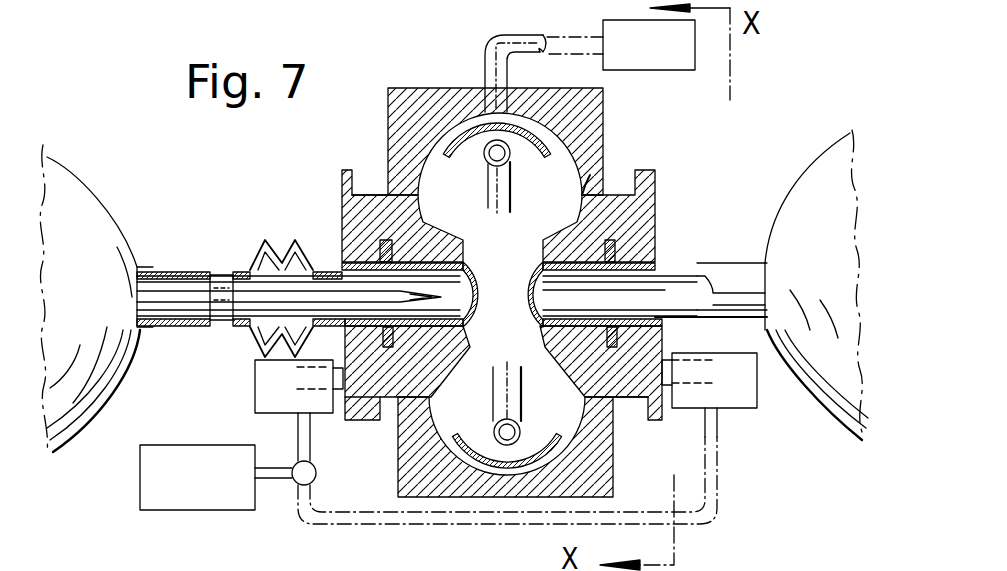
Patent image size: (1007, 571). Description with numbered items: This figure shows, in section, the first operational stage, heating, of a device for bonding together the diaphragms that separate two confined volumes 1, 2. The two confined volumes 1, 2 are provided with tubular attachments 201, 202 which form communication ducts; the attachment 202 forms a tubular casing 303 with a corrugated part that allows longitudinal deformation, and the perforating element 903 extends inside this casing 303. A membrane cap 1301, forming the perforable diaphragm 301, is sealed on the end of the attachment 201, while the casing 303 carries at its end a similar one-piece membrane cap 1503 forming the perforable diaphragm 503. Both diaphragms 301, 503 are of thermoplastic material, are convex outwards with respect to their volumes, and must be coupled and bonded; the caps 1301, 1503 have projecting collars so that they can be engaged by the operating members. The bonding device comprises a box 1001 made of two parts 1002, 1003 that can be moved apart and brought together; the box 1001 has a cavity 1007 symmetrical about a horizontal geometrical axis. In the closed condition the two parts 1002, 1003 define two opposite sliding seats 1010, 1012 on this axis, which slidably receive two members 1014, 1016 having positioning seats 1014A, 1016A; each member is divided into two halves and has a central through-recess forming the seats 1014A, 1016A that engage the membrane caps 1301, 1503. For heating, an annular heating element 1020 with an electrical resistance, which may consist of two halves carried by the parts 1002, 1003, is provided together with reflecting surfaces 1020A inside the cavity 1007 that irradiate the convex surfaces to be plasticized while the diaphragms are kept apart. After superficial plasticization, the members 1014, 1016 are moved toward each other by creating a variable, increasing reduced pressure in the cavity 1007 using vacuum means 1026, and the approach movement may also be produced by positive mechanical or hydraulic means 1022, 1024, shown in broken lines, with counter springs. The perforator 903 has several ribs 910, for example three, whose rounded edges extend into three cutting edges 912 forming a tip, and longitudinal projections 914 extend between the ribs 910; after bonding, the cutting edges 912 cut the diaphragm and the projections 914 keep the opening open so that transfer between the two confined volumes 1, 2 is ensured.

The confined volume 1 is at (832, 147).
The confined volume 2 is at (97, 203).
The tubular attachment 201 is at (743, 297).
The tubular attachment 202 is at (170, 313).
The perforable diaphragm 301 is at (531, 295).
The tubular casing 303 is at (265, 330).
The perforable diaphragm 503 is at (462, 343).
The perforating element 903 is at (313, 265).
The ribs 910 is at (247, 270).
The cutting edges 912 is at (448, 300).
The longitudinal projections 914 is at (368, 388).
The box 1001 is at (376, 91).
The part of the box 1002 is at (398, 458).
The part of the box 1003 is at (594, 118).
The cavity 1007 is at (437, 432).
The sliding seat 1010 is at (616, 385).
The sliding seat 1012 is at (375, 193).
The positioning member 1014 is at (659, 188).
The positioning seat 1014A is at (660, 260).
The positioning member 1016 is at (341, 190).
The positioning seat 1016A is at (341, 258).
The annular heating element 1020 is at (517, 147).
The reflecting surfaces 1020A is at (462, 150).
The positive approach means 1022 is at (750, 407).
The positive approach means 1024 is at (272, 410).
The vacuum means 1026 is at (522, 54).
The membrane cap 1301 is at (598, 158).
The membrane cap 1503 is at (458, 236).